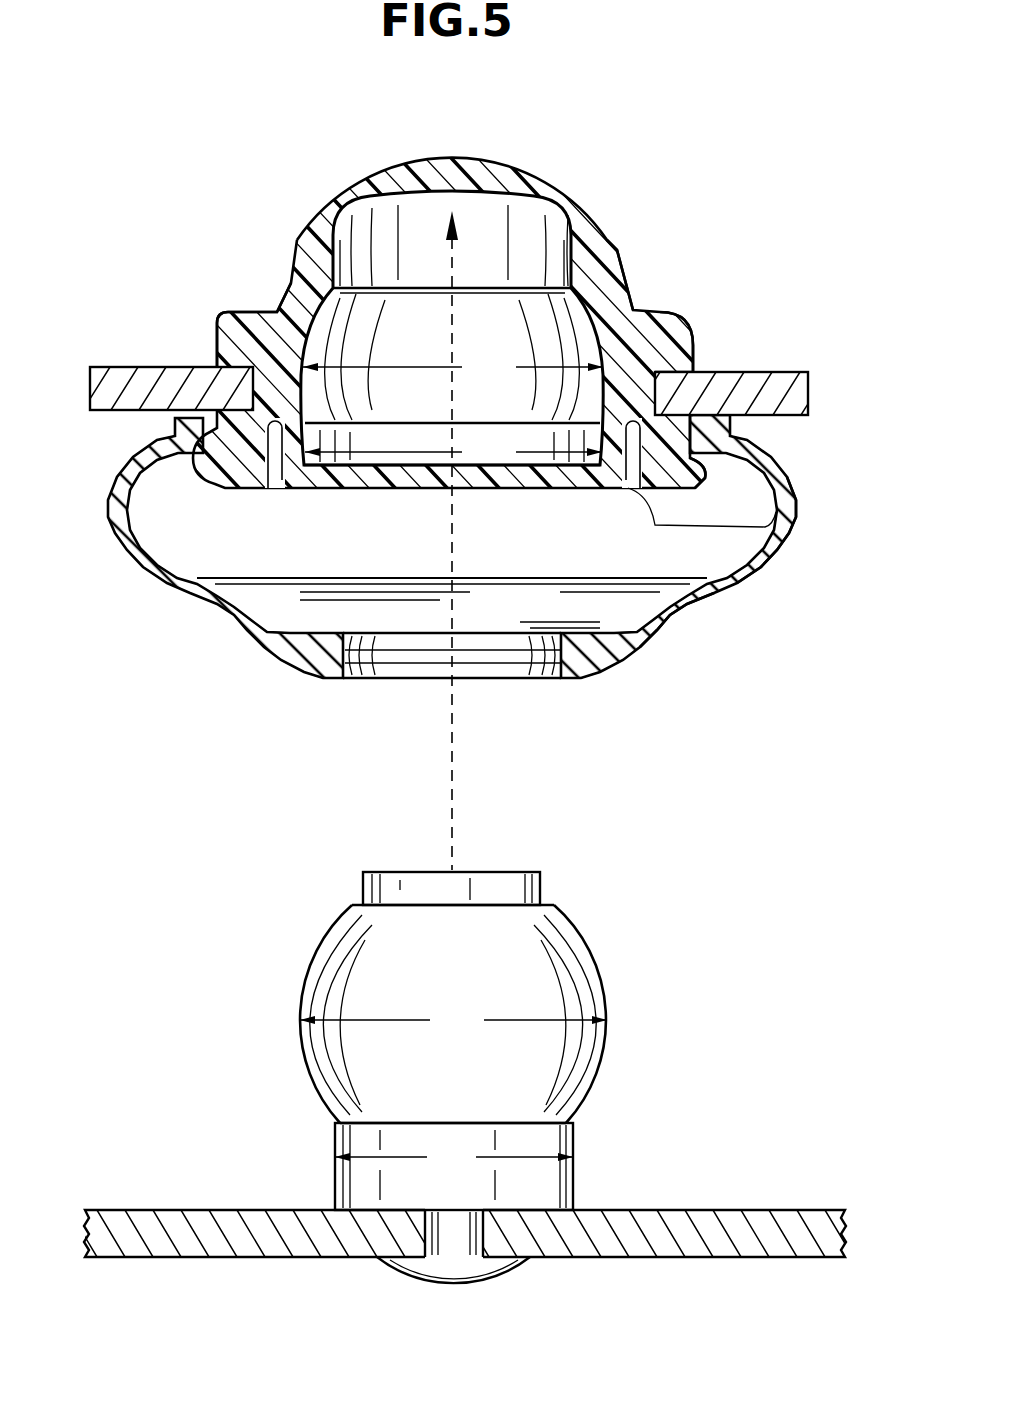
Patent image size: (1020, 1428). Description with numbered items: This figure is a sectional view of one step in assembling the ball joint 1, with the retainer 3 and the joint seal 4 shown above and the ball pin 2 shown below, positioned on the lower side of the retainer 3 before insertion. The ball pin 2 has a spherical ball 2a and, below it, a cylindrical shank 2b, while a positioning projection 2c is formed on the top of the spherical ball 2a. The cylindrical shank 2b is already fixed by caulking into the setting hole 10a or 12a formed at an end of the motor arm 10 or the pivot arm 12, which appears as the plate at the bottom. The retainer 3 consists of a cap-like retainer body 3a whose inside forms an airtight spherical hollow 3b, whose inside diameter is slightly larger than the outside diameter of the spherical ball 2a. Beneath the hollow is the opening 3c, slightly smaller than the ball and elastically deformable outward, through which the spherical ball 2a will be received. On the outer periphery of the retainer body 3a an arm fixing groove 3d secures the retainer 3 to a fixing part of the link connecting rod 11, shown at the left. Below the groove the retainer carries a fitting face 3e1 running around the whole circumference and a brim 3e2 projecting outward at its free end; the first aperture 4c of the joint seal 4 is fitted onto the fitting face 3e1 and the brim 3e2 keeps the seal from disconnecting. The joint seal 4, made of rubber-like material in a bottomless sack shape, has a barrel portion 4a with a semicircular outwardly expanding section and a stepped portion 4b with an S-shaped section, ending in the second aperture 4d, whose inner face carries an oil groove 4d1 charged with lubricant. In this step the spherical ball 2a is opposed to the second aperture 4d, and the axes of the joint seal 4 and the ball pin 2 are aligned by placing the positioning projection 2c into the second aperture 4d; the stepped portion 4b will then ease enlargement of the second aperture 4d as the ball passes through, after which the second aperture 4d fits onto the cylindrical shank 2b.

The ball joint 1 is at (205, 143).
The ball pin 2 is at (468, 1027).
The spherical ball 2a is at (577, 993).
The cylindrical shank 2b is at (543, 1192).
The positioning projection 2c is at (388, 887).
The retainer 3 is at (591, 207).
The retainer body 3a is at (615, 322).
The spherical hollow 3b is at (668, 340).
The opening 3c is at (793, 523).
The arm fixing groove 3d is at (243, 365).
The fitting face 3e1 is at (760, 317).
The brim 3e2 is at (762, 443).
The joint seal 4 is at (497, 532).
The barrel portion 4a is at (780, 567).
The stepped portion 4b is at (670, 607).
The first aperture 4c is at (773, 372).
The second aperture 4d is at (607, 670).
The oil groove 4d1 is at (547, 662).
The motor arm 10 is at (454, 1244).
The pivot arm 12 is at (447, 1275).
The setting hole 10a is at (490, 1275).
The setting hole 12a is at (500, 1243).
The link connecting rod 11 is at (113, 367).